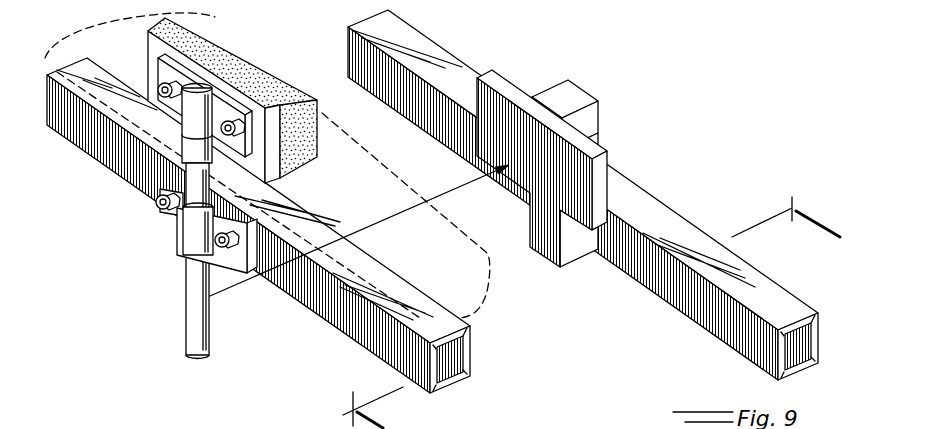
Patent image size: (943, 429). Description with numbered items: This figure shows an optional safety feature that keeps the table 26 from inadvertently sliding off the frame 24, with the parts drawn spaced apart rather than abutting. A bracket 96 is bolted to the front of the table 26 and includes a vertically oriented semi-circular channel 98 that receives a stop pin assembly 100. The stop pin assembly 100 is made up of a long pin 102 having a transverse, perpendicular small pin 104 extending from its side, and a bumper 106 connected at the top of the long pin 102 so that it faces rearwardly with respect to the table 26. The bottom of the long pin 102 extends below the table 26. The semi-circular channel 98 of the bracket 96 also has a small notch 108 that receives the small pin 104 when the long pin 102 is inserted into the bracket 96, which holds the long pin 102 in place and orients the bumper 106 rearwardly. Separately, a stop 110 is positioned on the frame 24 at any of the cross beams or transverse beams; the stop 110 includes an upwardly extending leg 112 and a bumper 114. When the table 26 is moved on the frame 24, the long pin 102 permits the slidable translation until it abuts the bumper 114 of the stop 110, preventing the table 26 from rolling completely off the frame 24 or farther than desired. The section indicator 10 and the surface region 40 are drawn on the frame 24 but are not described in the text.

The section line 10- 10 is at (591, 312).
The frame 24 is at (686, 199).
The table 26 is at (96, 173).
The frame member surface 40 is at (686, 222).
The bracket 96 is at (160, 196).
The semi-circular channel 98 is at (180, 213).
The stop pin assembly 100 is at (260, 216).
The long pin 102 is at (193, 295).
The small pin 104 is at (177, 238).
The bumper 106 is at (237, 48).
The notch 108 is at (262, 212).
The stop 110 is at (575, 150).
The upwardly extending leg 112 is at (590, 124).
The bumper 114 is at (588, 146).